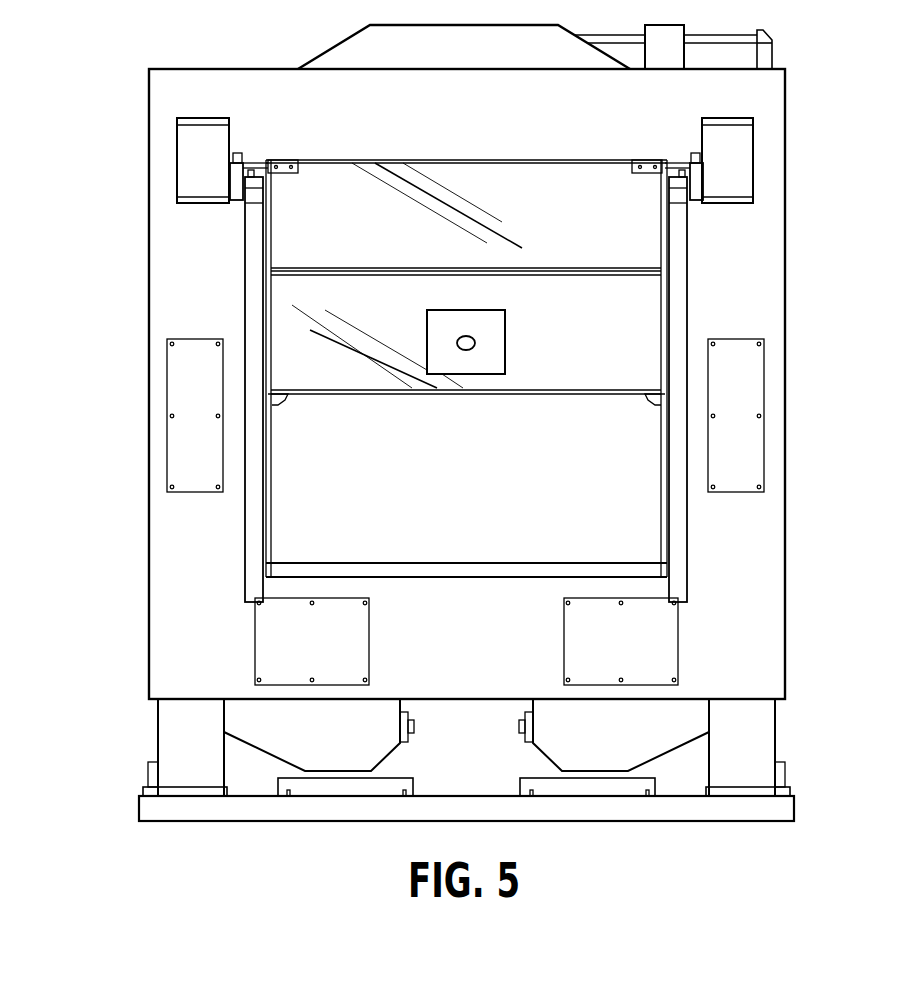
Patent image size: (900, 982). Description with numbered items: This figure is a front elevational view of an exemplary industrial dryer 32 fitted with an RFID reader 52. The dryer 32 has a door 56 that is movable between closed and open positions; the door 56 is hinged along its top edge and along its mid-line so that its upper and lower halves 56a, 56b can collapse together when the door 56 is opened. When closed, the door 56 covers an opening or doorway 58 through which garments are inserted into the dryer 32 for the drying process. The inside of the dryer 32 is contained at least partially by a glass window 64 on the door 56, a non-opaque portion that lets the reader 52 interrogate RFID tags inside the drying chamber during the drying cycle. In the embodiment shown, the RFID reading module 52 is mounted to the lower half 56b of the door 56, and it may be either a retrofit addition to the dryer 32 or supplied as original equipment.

The dryer 32 is at (146, 115).
The glass window 64 is at (642, 232).
The door 56 is at (557, 348).
The upper half 56a is at (575, 214).
The lower half 56b is at (615, 338).
The doorway 58 is at (513, 493).
The RFID reader 52 is at (493, 374).